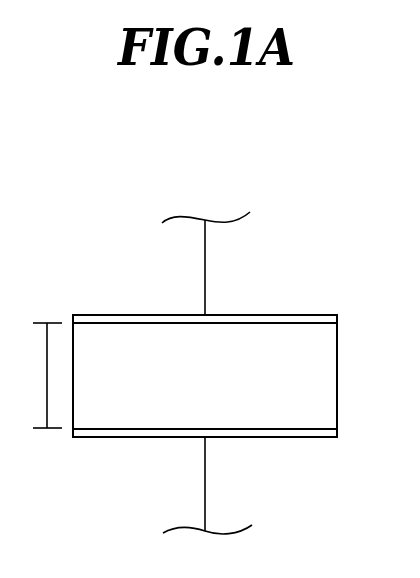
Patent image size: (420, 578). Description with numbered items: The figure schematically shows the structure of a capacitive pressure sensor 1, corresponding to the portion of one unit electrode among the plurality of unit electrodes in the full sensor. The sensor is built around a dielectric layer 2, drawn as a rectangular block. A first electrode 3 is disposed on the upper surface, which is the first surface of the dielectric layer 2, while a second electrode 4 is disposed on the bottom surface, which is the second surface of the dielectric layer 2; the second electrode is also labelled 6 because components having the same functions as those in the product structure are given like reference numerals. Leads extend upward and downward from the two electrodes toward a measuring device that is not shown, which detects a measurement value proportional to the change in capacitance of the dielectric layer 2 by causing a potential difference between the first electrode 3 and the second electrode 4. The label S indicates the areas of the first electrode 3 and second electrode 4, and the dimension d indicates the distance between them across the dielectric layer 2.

The capacitive pressure sensor 1 is at (230, 344).
The dielectric layer 2 is at (317, 362).
The first electrode 3 is at (125, 315).
The second electrode 4 is at (205, 473).
The electrode 6 is at (97, 437).
The areas of the first electrode and the second electrode S is at (271, 315).
The distance of the first electrode and the second electrode d is at (41, 375).